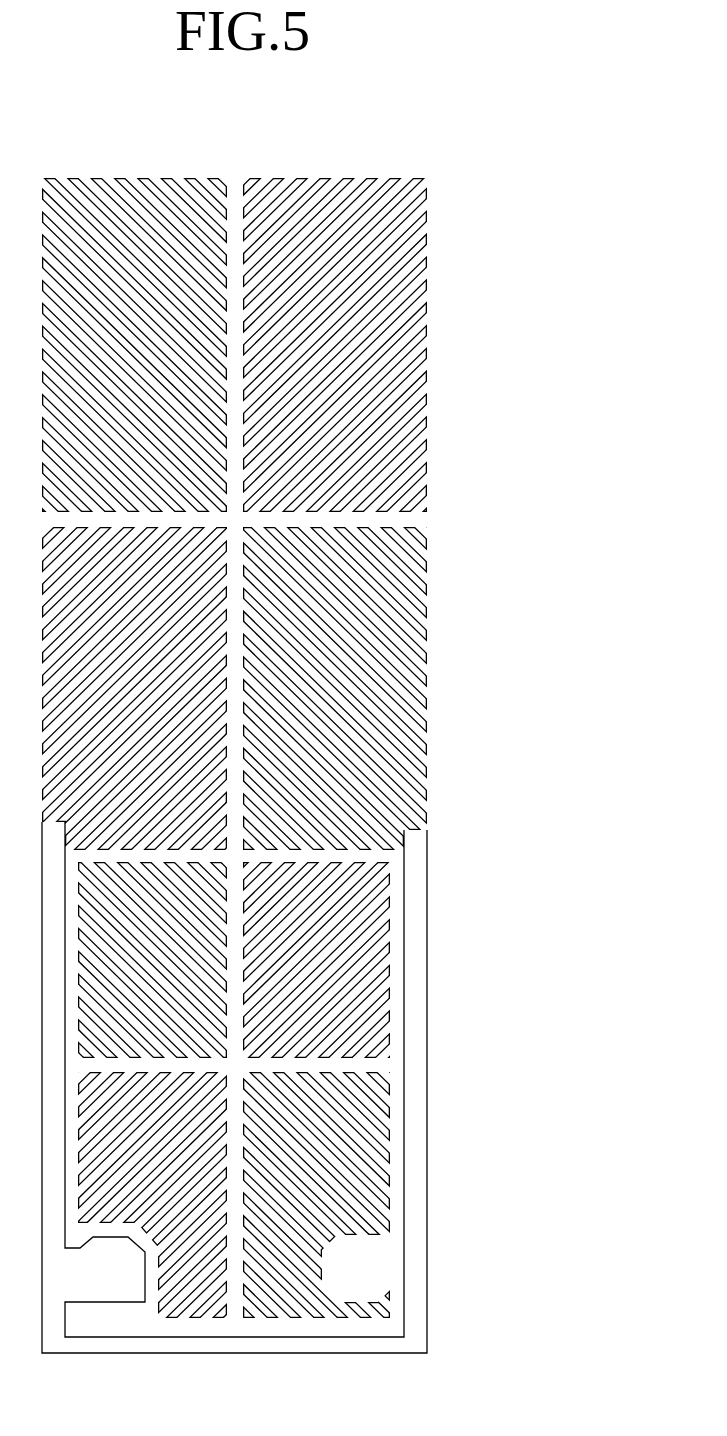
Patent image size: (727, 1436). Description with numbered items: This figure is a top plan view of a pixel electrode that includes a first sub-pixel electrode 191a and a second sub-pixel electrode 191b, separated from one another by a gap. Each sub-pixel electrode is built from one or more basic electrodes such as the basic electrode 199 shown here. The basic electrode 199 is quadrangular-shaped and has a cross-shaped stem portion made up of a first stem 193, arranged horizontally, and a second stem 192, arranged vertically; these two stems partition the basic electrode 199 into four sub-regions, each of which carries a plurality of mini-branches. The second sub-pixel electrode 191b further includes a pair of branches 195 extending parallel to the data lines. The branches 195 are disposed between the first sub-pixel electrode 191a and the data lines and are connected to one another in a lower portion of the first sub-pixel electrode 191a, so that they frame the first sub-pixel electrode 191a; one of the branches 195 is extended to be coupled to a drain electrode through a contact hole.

The basic electrode 199 is at (492, 182).
The second stem 192 is at (243, 322).
The first stem 193 is at (362, 508).
The first sub-pixel electrode 191a is at (390, 888).
The second sub-pixel electrode 191b is at (402, 593).
The branch 195 is at (427, 973).